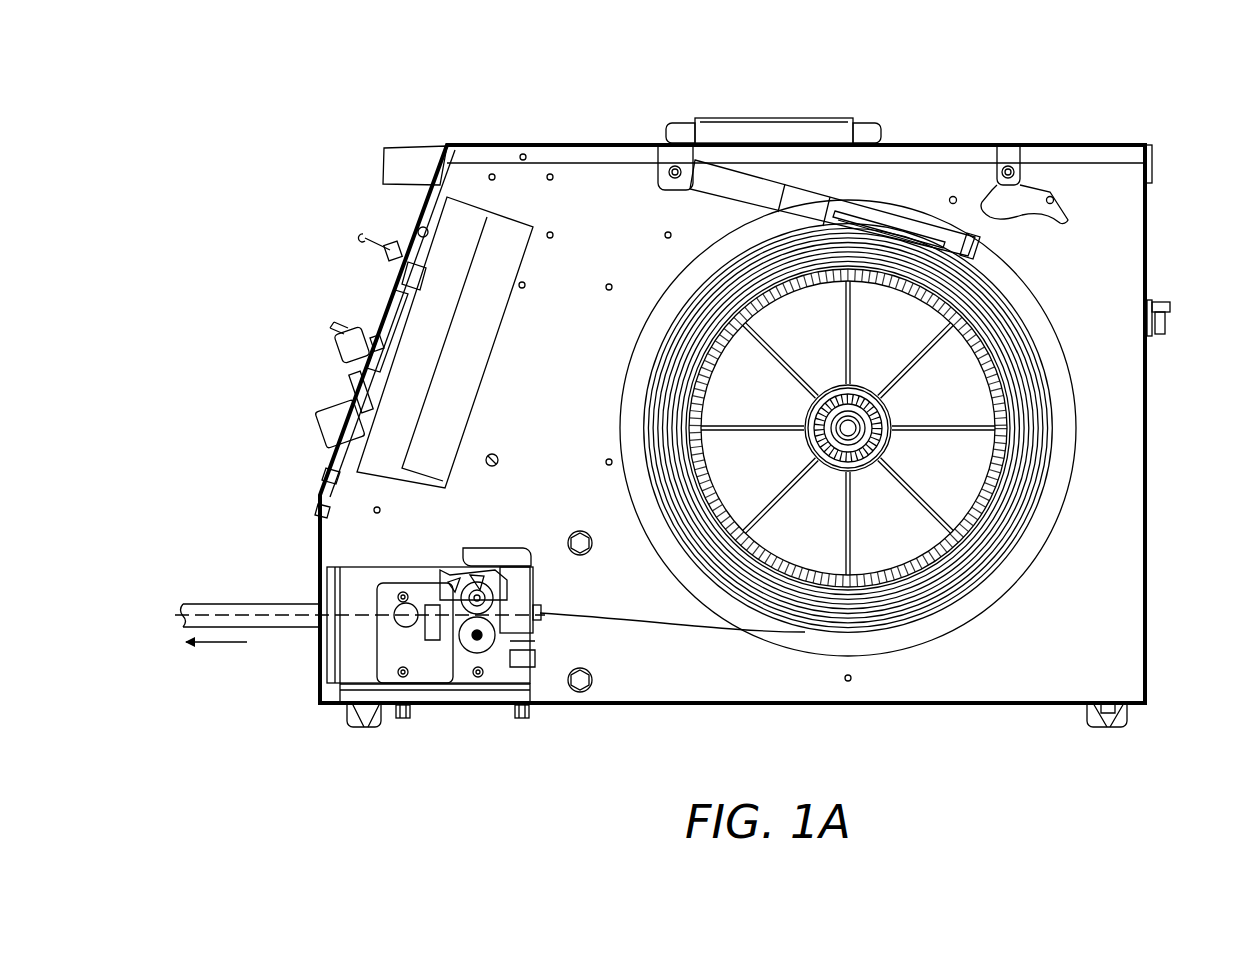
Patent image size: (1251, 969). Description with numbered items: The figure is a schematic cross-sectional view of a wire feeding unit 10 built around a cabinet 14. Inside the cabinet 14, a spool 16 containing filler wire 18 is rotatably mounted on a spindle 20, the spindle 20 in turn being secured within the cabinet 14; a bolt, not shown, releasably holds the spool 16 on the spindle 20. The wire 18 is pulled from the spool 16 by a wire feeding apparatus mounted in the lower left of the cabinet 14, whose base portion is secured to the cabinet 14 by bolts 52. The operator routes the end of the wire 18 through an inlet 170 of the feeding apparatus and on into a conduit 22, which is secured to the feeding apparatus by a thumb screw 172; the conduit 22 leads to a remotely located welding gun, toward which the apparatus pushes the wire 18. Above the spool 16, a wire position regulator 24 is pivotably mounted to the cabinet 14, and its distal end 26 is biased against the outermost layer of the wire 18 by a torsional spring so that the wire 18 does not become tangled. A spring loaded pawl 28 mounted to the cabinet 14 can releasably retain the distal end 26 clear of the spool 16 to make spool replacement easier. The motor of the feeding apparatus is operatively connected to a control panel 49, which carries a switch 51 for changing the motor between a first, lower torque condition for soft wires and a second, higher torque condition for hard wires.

The wire feeding unit 10 is at (1047, 97).
The cabinet 14 is at (783, 422).
The spool 16 is at (789, 428).
The filler wire 18 is at (636, 622).
The spindle 20 is at (876, 470).
The conduit 22 is at (232, 603).
The wire position regulator 24 is at (908, 188).
The distal end 26 is at (928, 214).
The spring loaded pawl 28 is at (1062, 187).
The control panel 49 is at (353, 290).
The switch 51 is at (353, 218).
The bolts 52 is at (402, 718).
The inlet 170 is at (404, 651).
The thumb screw 172 is at (410, 627).